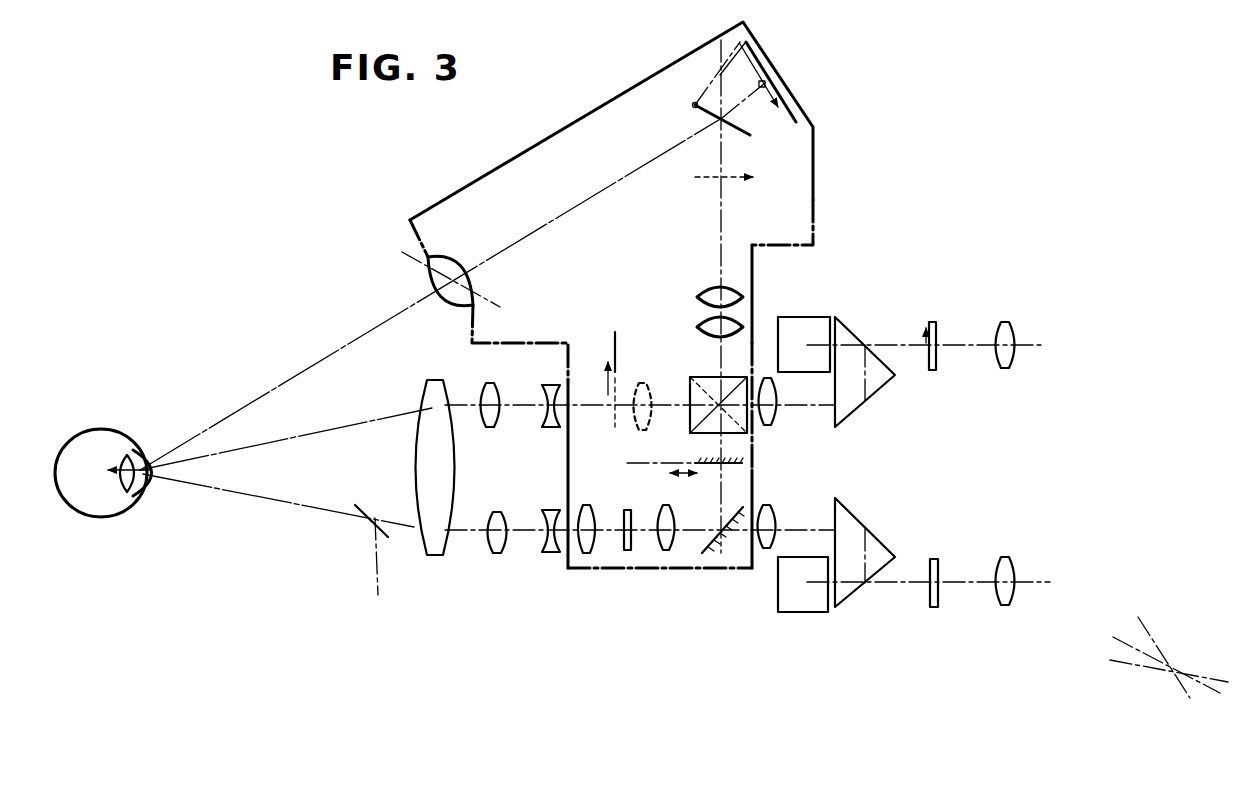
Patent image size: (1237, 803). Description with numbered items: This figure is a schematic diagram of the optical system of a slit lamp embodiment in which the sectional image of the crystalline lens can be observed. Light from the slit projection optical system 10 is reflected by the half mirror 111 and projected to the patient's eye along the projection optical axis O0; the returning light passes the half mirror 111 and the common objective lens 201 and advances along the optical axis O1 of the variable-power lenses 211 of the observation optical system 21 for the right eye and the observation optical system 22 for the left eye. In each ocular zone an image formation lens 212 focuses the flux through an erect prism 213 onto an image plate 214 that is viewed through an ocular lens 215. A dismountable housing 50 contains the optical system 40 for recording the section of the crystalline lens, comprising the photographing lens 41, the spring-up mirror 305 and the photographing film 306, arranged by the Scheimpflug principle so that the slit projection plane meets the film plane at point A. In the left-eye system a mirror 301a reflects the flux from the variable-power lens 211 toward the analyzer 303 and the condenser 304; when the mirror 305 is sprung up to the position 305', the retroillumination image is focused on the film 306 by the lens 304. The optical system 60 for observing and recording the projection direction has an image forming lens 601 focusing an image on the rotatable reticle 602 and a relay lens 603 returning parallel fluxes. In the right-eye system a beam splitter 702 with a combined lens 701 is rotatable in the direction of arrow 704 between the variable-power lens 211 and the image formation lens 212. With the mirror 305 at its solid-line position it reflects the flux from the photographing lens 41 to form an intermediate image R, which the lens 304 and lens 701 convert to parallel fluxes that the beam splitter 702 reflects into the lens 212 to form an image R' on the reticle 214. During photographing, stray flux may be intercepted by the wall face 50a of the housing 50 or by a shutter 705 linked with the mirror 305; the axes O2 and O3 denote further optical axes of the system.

The slit projection optical system 10 is at (377, 597).
The half mirror 111 is at (360, 507).
The observation optical system for the right eye 21 is at (881, 408).
The observation optical system for the left eye 22 is at (893, 530).
The optical system for recording the section of the crystalline lens 40 is at (508, 193).
The photographing lens 41 is at (462, 262).
The housing 50 is at (577, 117).
The wall face of the housing 50a is at (578, 395).
The optical system for observing and recording the projection direction 60 is at (607, 551).
The objective lens 201 is at (437, 556).
The variable-power lens 211 is at (553, 428).
The image formation lens 212 is at (776, 420).
The erect prism 213 is at (817, 323).
The image plate 214 is at (937, 322).
The ocular lens 215 is at (1013, 322).
The mirror 301a is at (712, 546).
The analyzer 303 is at (744, 462).
The condenser 304 is at (699, 290).
The spring-up mirror 305 is at (748, 129).
The spring-up position of the spring-up mirror 305' is at (757, 53).
The photographing film 306 is at (778, 58).
The image forming lens 601 is at (586, 506).
The reticle 602 is at (629, 552).
The relay lens 603 is at (674, 505).
The lens 701 is at (698, 323).
The beam splitter 702 is at (733, 377).
The arrow indicating rotation direction 704 is at (688, 347).
The shutter 705 is at (613, 333).
The point of intersection A is at (1175, 670).
The intermediate image R is at (727, 200).
The image corresponding to the intermediate image R' is at (936, 385).
The projection optical axis O0 is at (307, 507).
The optical axis of the variable-power lens O1 is at (528, 547).
The optical axis O2 is at (732, 50).
The optical axis O3 is at (598, 196).